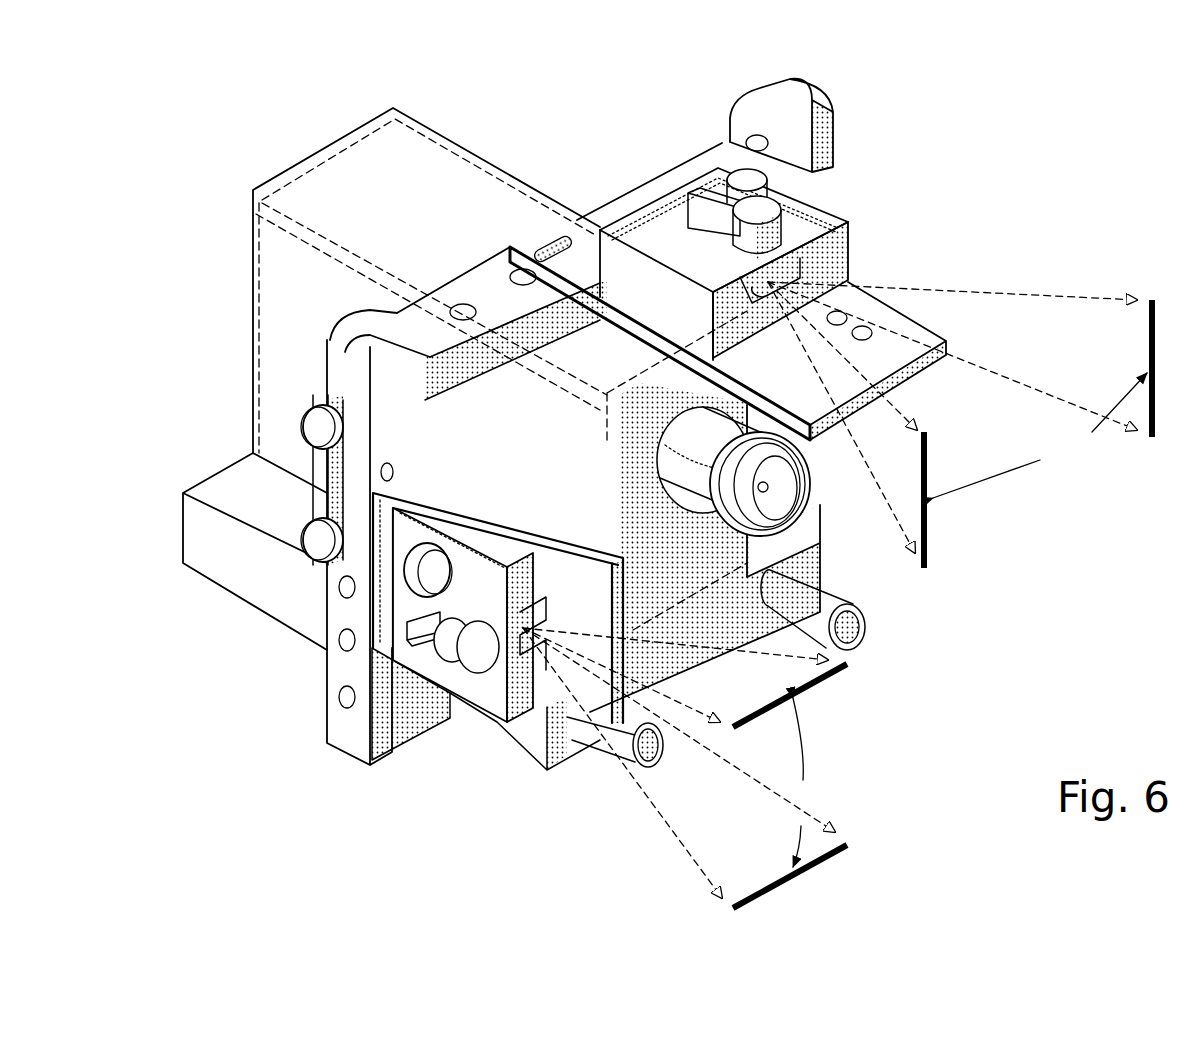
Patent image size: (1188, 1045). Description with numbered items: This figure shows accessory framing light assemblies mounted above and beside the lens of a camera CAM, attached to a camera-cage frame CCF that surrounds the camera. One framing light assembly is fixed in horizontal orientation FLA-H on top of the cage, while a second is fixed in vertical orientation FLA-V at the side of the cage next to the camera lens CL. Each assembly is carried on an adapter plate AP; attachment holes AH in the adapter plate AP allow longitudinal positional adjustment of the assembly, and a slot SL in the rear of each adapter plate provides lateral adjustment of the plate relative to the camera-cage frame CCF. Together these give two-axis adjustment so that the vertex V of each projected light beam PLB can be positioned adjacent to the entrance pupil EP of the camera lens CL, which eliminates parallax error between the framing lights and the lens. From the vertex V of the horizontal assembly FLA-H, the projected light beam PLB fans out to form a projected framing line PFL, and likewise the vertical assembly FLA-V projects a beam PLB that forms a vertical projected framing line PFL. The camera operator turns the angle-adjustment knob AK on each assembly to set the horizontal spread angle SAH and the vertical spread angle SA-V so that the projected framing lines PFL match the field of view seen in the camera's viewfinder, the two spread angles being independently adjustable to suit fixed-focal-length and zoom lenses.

The camera CAM is at (317, 98).
The camera-cage frame CCF is at (367, 327).
The slot SL is at (550, 240).
The adapter plate AP is at (527, 240).
The attachment holes AH is at (873, 337).
The angle-adjustment knob AK is at (775, 218).
The framing-light assembly horizontal orientation FLA-H is at (850, 237).
The framing-light assembly vertical orientation FLA-V is at (493, 710).
The vertex V is at (765, 282).
The camera lens CL is at (807, 462).
The entrance pupil EP is at (766, 490).
The projected light beam PLB is at (980, 357).
The projected framing line PFL is at (1163, 440).
The spread angle-horizontal SAH is at (1040, 435).
The spread angle-vertical SA-V is at (795, 782).